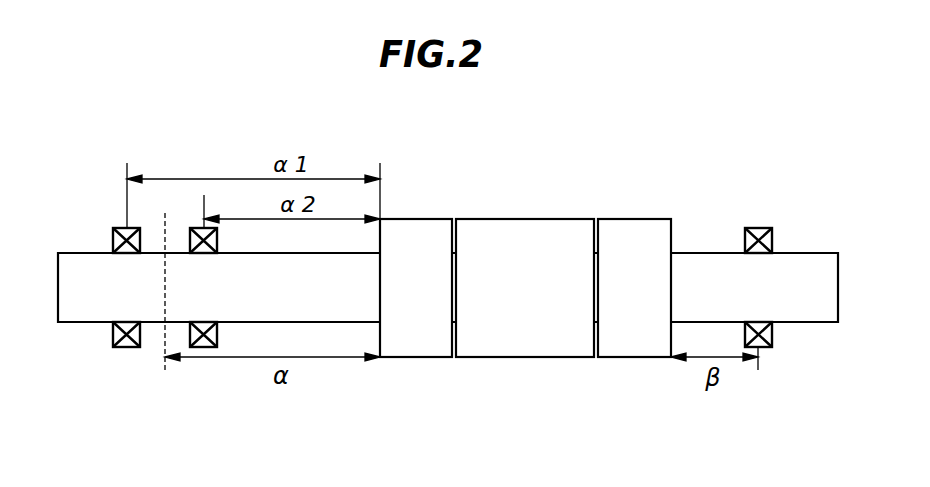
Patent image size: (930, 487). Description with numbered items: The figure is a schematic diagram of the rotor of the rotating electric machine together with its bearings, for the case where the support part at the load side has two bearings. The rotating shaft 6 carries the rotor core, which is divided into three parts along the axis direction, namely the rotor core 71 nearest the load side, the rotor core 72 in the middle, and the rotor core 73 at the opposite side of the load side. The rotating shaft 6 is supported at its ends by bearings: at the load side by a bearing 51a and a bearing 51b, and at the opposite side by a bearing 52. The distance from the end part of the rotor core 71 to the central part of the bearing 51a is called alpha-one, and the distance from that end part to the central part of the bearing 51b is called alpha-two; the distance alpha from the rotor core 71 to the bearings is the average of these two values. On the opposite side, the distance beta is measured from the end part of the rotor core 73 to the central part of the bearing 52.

The rotating shaft 6 is at (698, 253).
The bearing 51a is at (128, 347).
The bearing 51b is at (202, 347).
The bearing 52 is at (758, 228).
The rotor core 71 is at (412, 219).
The rotor core 72 is at (520, 219).
The rotor core 73 is at (627, 219).